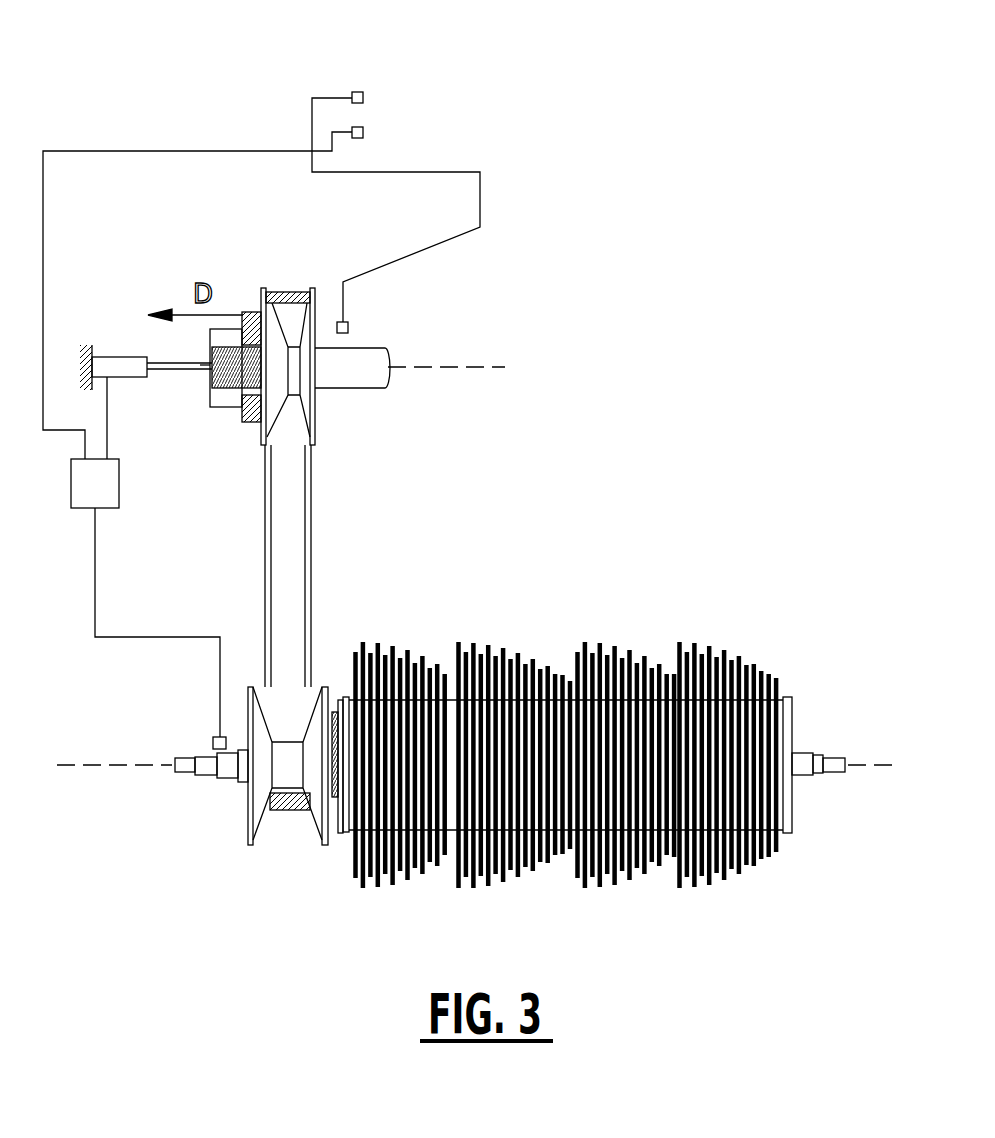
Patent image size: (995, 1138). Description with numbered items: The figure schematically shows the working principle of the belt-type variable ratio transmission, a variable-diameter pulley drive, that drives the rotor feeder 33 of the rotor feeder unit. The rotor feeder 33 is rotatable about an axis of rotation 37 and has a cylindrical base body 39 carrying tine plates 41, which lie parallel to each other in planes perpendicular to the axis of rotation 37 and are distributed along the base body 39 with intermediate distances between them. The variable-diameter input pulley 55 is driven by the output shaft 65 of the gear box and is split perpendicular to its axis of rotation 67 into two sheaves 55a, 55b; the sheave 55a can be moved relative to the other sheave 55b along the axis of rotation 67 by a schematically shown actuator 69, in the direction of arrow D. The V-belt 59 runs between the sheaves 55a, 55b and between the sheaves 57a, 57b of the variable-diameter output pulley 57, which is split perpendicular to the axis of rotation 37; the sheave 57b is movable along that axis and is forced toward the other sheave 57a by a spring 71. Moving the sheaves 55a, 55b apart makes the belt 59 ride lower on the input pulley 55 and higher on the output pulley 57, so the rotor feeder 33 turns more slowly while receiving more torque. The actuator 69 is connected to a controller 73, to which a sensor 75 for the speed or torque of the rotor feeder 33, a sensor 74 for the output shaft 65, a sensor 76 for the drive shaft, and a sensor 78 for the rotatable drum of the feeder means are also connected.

The rotor feeder 33 is at (826, 665).
The axis of rotation 37 is at (110, 765).
The cylindrical base body 39 is at (788, 807).
The tine plates 41 is at (575, 660).
The variable-diameter input pulley 55 is at (327, 336).
The sheave 55a is at (270, 347).
The sheave 55b is at (307, 400).
The variable-diameter output pulley 57 is at (243, 815).
The sheave 57a is at (258, 815).
The sheave 57b is at (313, 813).
The V-belt 59 is at (285, 573).
The output shaft 65 is at (368, 358).
The axis of rotation 67 is at (452, 368).
The actuator 69 is at (130, 372).
The spring 71 is at (332, 743).
The controller 73 is at (112, 485).
The sensor 74 is at (349, 327).
The sensor 75 is at (223, 745).
The sensor 76 is at (365, 132).
The sensor 78 is at (365, 97).